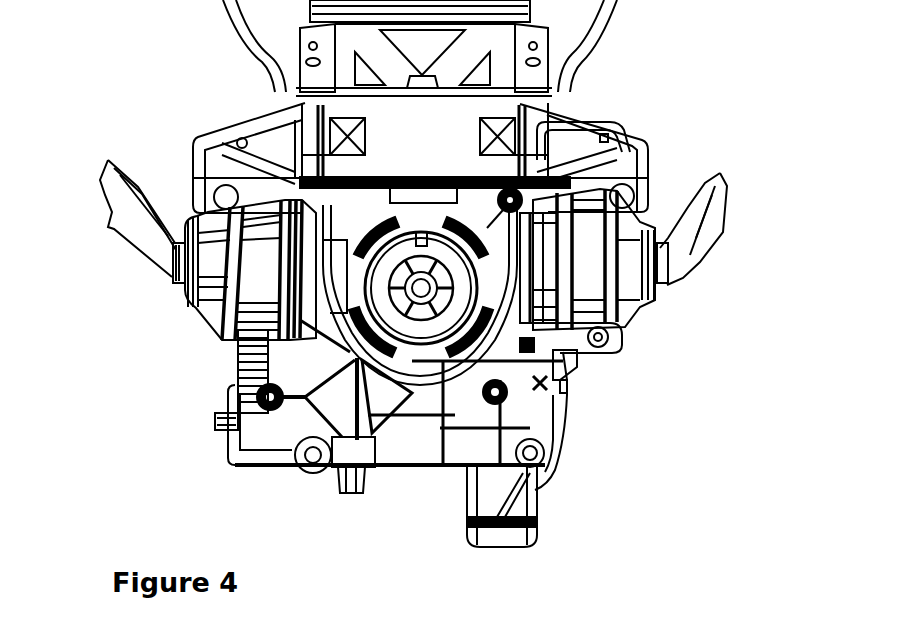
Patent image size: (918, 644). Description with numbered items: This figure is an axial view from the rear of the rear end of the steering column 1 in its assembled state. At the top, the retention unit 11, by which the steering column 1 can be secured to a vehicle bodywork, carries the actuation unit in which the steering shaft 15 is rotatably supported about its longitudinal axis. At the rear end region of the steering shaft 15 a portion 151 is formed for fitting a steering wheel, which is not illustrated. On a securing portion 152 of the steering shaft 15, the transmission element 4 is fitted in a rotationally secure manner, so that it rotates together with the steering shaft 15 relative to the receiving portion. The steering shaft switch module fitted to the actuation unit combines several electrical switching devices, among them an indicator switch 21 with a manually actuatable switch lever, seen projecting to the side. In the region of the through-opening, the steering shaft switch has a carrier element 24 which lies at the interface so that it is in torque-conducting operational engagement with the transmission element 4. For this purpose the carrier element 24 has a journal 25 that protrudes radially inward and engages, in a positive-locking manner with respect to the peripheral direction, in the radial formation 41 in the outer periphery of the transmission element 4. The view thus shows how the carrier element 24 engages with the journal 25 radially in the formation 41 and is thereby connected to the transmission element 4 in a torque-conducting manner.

The steering column 1 is at (697, 121).
The retention unit 11 is at (580, 13).
The carrier element 24 is at (272, 105).
The journal 25 is at (365, 150).
The indicator switch 21 is at (128, 212).
The radial formation 41 is at (545, 270).
The transmission element 4 is at (537, 347).
The steering shaft 15 is at (419, 322).
The portion for fitting a steering wheel 151 is at (340, 313).
The securing portion 152 is at (553, 413).